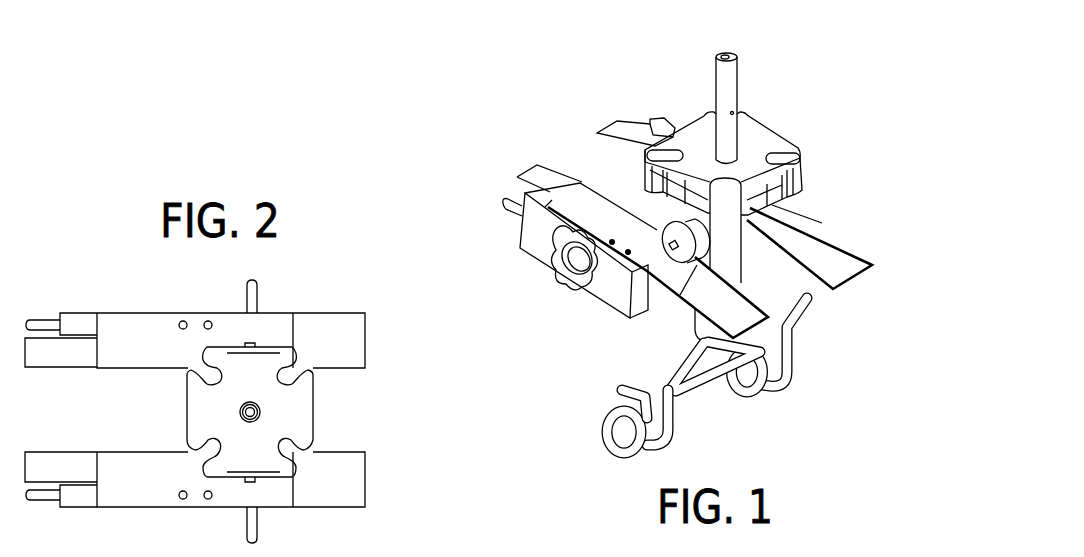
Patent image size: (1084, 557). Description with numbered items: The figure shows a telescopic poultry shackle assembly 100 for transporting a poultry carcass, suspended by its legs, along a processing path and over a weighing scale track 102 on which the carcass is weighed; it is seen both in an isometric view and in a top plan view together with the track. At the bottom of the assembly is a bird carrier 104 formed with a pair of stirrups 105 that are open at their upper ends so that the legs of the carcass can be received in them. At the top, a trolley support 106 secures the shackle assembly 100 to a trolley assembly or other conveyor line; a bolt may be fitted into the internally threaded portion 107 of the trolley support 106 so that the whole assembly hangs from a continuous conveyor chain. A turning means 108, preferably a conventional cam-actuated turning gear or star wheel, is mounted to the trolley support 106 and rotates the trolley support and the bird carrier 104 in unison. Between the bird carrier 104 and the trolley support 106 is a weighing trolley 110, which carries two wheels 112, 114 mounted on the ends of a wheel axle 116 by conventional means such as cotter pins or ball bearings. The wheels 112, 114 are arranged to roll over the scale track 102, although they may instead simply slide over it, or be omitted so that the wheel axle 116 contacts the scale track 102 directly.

In FIG. 1, the shackle assembly 100 is at (490, 84).
In FIG. 2, the weighing scale track 102 is at (310, 343).
In FIG. 1, the weighing scale track 102 is at (728, 310).
In FIG. 1, the bird carrier 104 is at (806, 449).
In FIG. 2, the stirrups 105 is at (242, 287).
In FIG. 1, the stirrups 105 is at (752, 397).
In FIG. 1, the trolley support 106 is at (750, 93).
In FIG. 1, the internally threaded portion 107 is at (720, 53).
In FIG. 2, the turning means 108 is at (188, 423).
In FIG. 1, the turning means 108 is at (685, 142).
In FIG. 1, the weighing trolley 110 is at (555, 306).
In FIG. 1, the wheel 112 is at (685, 252).
In FIG. 1, the wheel 114 is at (783, 207).
In FIG. 1, the wheel axle 116 is at (669, 252).